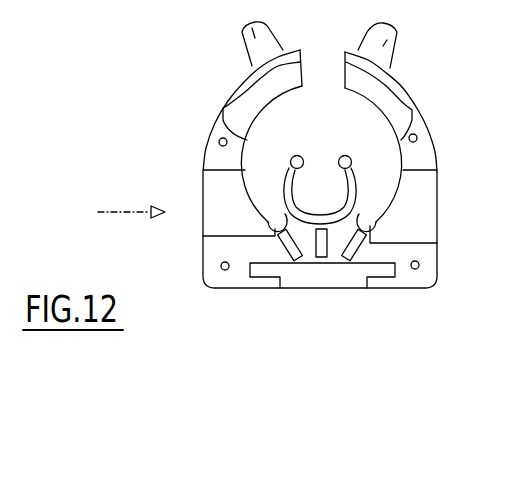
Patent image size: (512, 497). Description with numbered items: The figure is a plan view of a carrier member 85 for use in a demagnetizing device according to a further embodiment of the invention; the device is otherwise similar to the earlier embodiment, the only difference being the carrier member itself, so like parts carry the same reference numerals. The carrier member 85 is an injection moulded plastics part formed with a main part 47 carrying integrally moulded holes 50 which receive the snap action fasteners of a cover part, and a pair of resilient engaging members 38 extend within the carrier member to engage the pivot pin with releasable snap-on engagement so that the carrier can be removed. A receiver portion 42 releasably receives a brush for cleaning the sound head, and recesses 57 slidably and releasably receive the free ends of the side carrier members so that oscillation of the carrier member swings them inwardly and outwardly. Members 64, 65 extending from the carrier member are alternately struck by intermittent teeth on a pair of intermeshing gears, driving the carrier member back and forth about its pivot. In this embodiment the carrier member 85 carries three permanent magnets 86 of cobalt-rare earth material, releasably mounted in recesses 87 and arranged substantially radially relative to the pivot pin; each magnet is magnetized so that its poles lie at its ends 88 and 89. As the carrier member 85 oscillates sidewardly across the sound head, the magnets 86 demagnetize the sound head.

The receiver portion 42 is at (13, 0).
The main part 47 is at (425, 255).
The holes 50 is at (219, 140).
The recesses 57 is at (215, 184).
The member 64 is at (387, 40).
The member 65 is at (252, 28).
The resilient engaging members 38 is at (295, 156).
The carrier member 85 is at (116, 214).
The permanent magnets 86 is at (332, 236).
The recesses 87 is at (280, 252).
The ends 88 is at (298, 260).
The ends 89 is at (268, 216).